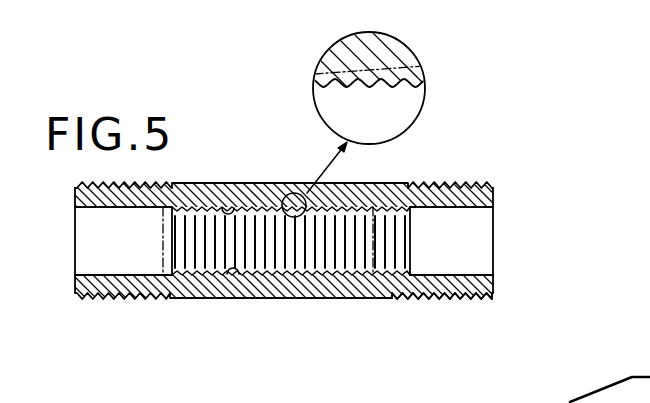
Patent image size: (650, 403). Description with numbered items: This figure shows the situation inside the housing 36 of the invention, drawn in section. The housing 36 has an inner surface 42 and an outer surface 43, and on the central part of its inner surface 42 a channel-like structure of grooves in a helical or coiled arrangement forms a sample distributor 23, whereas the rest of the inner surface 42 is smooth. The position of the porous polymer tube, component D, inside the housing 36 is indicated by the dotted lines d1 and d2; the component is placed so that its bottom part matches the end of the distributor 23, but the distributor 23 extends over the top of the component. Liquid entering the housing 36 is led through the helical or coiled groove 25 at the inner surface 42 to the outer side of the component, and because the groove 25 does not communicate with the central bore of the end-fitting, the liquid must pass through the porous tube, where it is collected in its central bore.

The housing 36 is at (468, 202).
The inner surface 42 is at (393, 88).
The outer surface 43 is at (395, 299).
The sample distributor 23 is at (240, 205).
The helical or coiled groove 25 is at (222, 244).
The dotted line d1 is at (168, 248).
The dotted line d2 is at (372, 242).